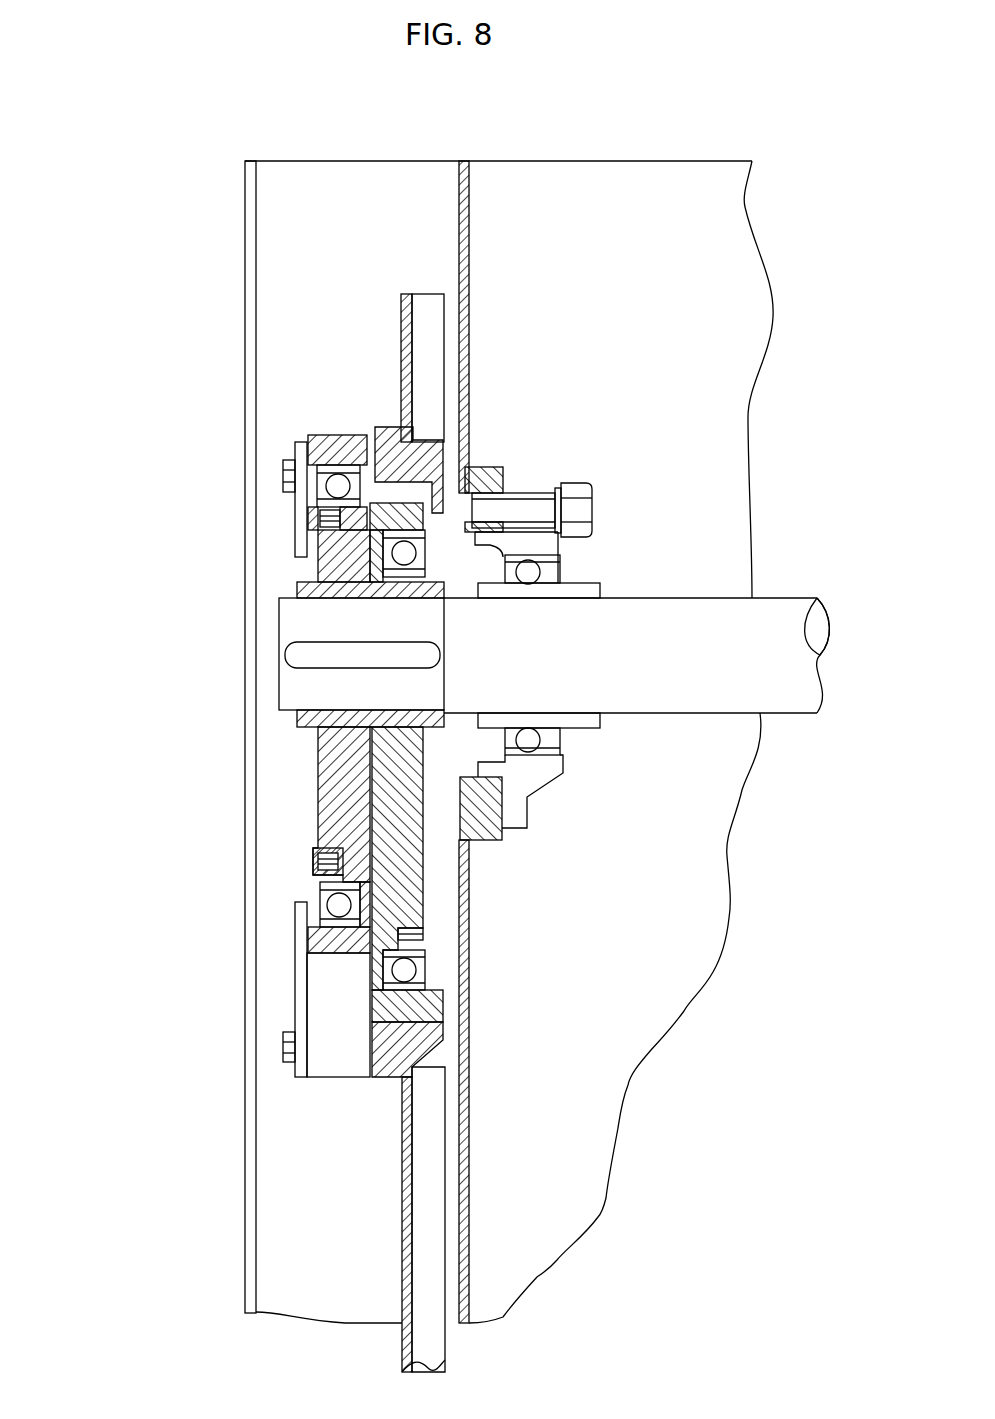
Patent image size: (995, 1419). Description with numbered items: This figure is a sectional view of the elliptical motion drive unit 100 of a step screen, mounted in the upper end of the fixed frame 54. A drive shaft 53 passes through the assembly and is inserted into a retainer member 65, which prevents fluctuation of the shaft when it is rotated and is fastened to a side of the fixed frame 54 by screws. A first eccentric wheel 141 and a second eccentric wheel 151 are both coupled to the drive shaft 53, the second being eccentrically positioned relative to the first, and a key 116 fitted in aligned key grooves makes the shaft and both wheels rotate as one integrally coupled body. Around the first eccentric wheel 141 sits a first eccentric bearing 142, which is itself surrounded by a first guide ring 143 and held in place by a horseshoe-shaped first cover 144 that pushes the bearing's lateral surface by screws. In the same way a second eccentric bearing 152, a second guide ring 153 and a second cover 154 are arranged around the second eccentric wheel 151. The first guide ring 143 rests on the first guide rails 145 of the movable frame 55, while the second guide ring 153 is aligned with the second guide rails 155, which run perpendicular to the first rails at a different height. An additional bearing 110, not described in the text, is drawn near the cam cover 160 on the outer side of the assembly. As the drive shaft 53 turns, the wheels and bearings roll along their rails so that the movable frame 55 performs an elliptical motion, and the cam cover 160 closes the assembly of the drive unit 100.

The elliptical motion drive unit 100 is at (305, 355).
The bearing 110 is at (282, 475).
The cam cover 160 is at (294, 542).
The key 116 is at (318, 644).
The second eccentric wheel 151 is at (332, 797).
The second cover 154 is at (314, 860).
The second eccentric bearing 152 is at (320, 905).
The second guide ring 153 is at (310, 958).
The second guide rails 155 is at (332, 1050).
The retainer member 65 is at (545, 487).
The drive shaft 53 is at (787, 607).
The first eccentric wheel 141 is at (430, 880).
The first cover 144 is at (420, 917).
The first eccentric bearing 142 is at (425, 968).
The first guide ring 143 is at (462, 1025).
The first guide rails 145 is at (402, 1060).
The fixed frame 54 is at (470, 1180).
The movable frame 55 is at (445, 1352).